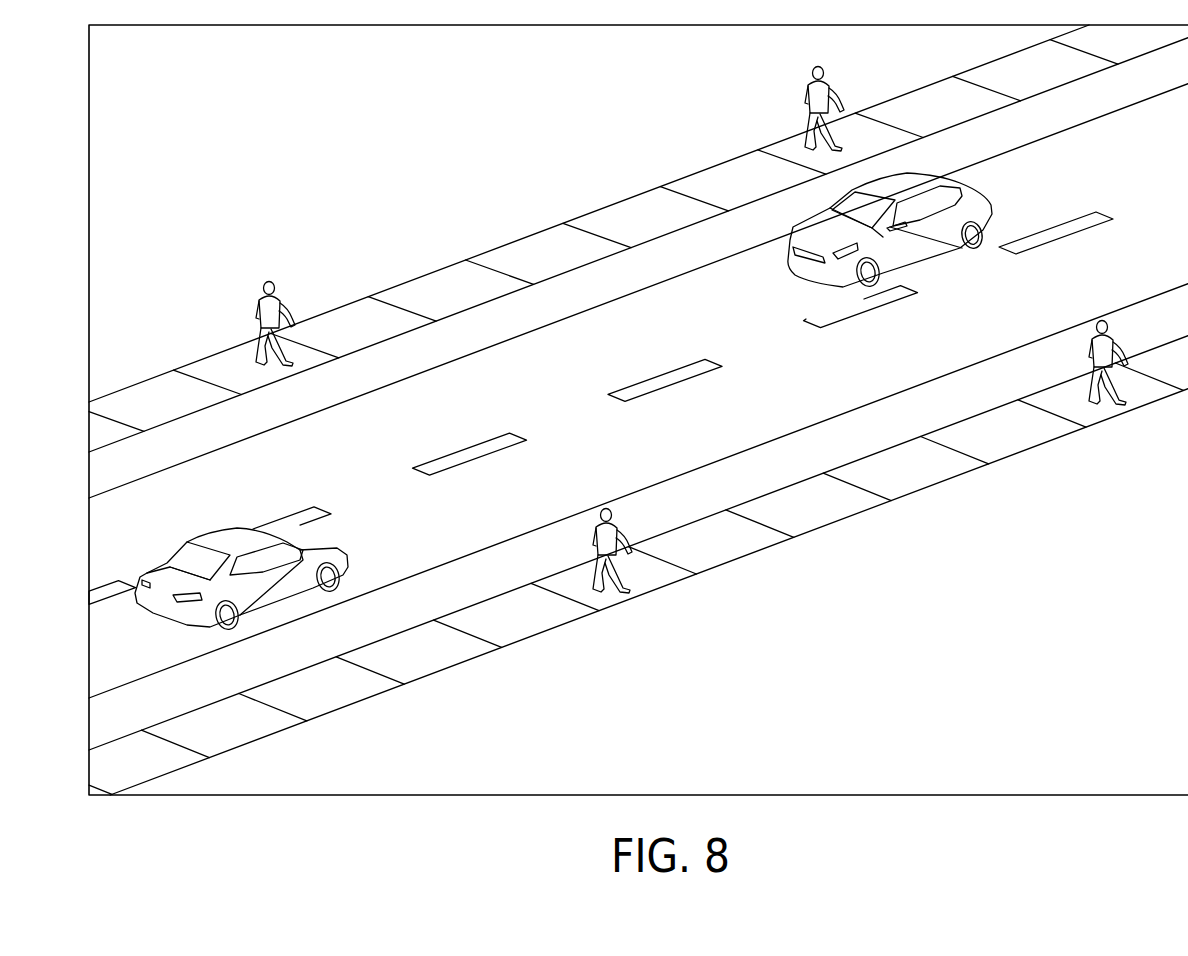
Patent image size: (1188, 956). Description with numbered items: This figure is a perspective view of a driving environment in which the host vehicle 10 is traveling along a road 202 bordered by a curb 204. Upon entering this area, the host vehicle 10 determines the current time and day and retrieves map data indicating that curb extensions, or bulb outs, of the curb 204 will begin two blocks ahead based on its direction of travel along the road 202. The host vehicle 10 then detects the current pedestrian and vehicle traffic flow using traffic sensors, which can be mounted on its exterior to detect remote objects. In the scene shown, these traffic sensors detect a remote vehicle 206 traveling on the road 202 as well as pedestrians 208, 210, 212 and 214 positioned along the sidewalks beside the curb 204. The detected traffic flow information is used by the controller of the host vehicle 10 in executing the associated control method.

The host vehicle 10 is at (896, 174).
The road 202 is at (663, 310).
The curb 204 is at (545, 327).
The remote vehicle 206 is at (213, 527).
The pedestrian 208 is at (805, 95).
The pedestrian 210 is at (290, 300).
The pedestrian 212 is at (592, 527).
The pedestrian 214 is at (1115, 333).